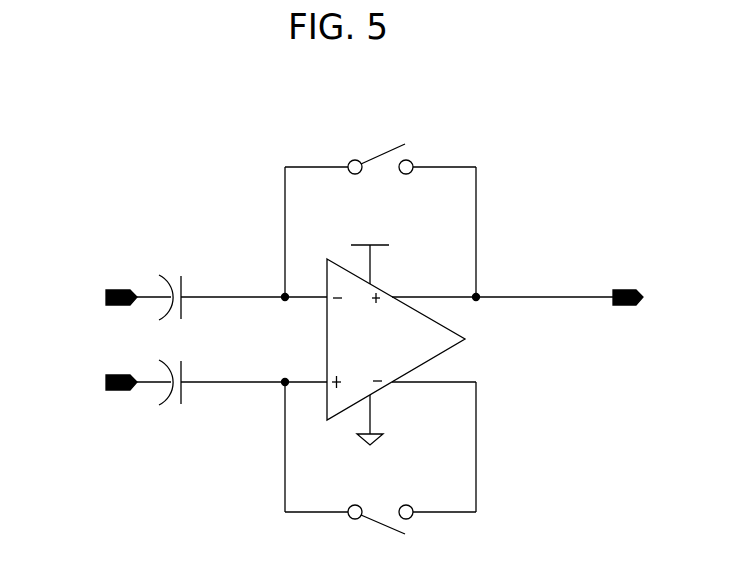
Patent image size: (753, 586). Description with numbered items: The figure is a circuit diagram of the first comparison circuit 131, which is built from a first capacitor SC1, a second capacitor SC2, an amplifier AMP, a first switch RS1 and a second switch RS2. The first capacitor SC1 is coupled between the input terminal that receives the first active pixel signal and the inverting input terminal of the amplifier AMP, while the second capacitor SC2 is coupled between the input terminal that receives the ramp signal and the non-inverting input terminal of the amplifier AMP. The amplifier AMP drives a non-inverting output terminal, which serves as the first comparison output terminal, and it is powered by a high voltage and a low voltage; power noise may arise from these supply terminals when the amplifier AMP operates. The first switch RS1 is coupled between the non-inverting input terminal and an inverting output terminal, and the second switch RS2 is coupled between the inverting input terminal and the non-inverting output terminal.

The first comparison circuit 131 is at (110, 118).
The first switch RS1 is at (375, 150).
The second switch RS2 is at (375, 529).
The first capacitor SC1 is at (187, 301).
The second capacitor SC2 is at (187, 386).
The amplifier AMP is at (396, 339).